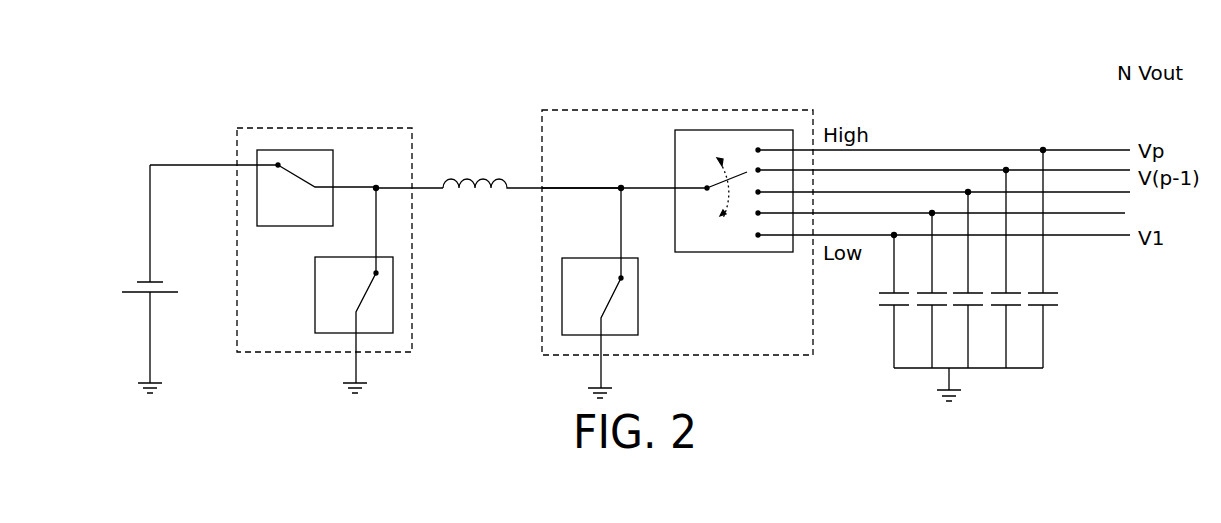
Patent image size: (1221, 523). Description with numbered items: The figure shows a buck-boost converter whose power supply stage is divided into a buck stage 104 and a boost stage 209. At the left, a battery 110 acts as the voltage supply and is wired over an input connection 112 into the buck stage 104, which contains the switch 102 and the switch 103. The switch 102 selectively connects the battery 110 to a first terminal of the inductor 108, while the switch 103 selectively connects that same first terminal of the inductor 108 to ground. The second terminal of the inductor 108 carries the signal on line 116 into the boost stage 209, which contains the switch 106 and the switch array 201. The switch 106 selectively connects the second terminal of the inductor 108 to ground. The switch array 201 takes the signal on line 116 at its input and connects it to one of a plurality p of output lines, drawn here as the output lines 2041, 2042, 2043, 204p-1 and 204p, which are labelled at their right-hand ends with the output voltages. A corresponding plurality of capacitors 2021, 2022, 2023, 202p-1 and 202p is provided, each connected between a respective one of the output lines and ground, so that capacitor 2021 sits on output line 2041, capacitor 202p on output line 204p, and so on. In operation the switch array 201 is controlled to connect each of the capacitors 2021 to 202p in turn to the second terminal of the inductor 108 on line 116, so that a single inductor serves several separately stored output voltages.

The battery 110 is at (130, 290).
The input wire 112 is at (175, 165).
The buck stage 104 is at (389, 128).
The switch 102 is at (282, 150).
The switch 103 is at (393, 317).
The inductor 108 is at (477, 180).
The boost stage 209 is at (560, 110).
The line 116 is at (581, 188).
The switch 106 is at (562, 318).
The switch array 201 is at (700, 130).
The output line 204p is at (1065, 150).
The output line 204p-1 is at (1112, 172).
The output line 2043 is at (1085, 194).
The output line 2042 is at (1124, 213).
The output line 2041 is at (1120, 237).
The capacitor 2021 is at (882, 308).
The capacitor 2022 is at (922, 311).
The capacitor 2023 is at (973, 311).
The capacitor 202p-1 is at (1012, 312).
The capacitor 202p is at (1050, 312).